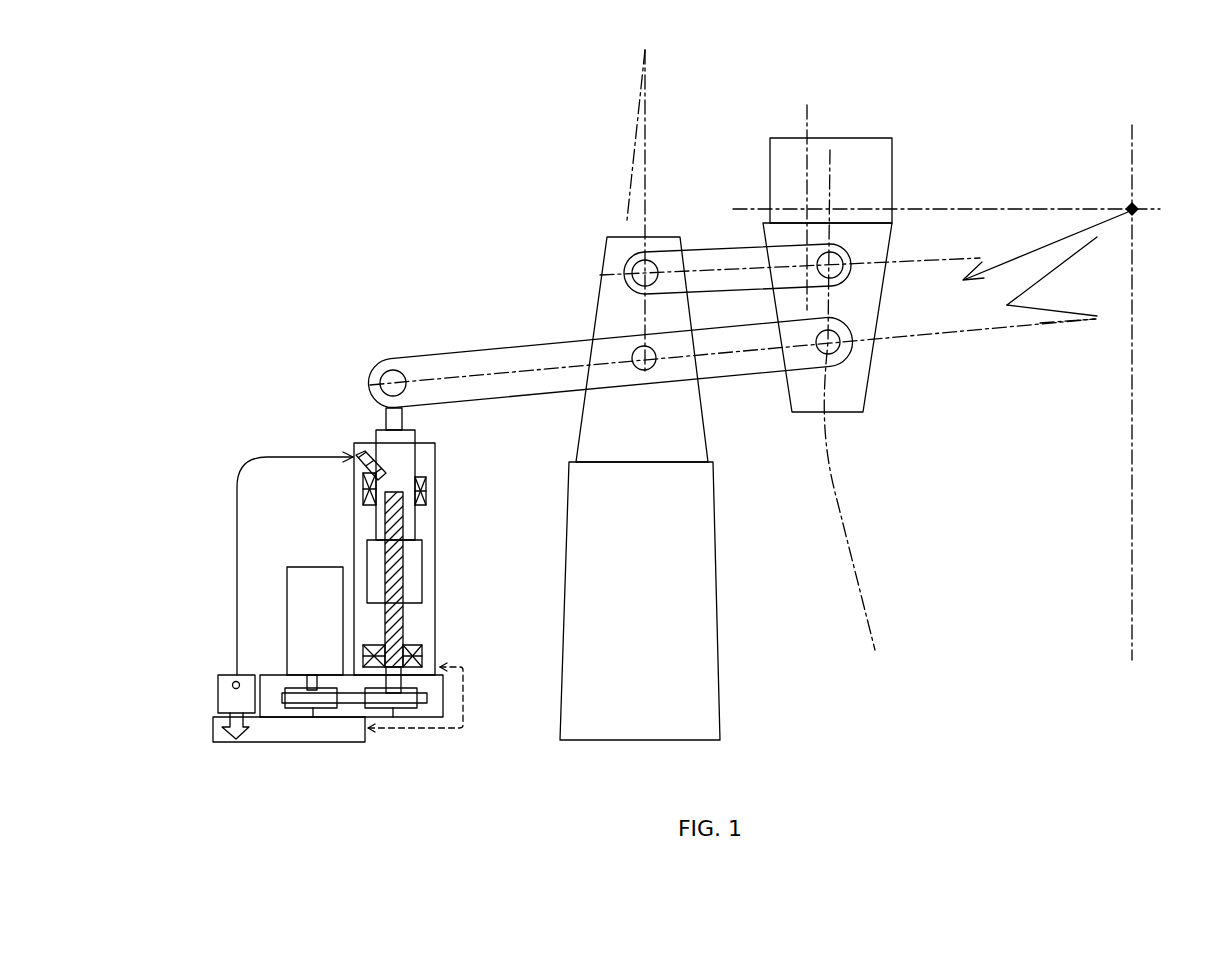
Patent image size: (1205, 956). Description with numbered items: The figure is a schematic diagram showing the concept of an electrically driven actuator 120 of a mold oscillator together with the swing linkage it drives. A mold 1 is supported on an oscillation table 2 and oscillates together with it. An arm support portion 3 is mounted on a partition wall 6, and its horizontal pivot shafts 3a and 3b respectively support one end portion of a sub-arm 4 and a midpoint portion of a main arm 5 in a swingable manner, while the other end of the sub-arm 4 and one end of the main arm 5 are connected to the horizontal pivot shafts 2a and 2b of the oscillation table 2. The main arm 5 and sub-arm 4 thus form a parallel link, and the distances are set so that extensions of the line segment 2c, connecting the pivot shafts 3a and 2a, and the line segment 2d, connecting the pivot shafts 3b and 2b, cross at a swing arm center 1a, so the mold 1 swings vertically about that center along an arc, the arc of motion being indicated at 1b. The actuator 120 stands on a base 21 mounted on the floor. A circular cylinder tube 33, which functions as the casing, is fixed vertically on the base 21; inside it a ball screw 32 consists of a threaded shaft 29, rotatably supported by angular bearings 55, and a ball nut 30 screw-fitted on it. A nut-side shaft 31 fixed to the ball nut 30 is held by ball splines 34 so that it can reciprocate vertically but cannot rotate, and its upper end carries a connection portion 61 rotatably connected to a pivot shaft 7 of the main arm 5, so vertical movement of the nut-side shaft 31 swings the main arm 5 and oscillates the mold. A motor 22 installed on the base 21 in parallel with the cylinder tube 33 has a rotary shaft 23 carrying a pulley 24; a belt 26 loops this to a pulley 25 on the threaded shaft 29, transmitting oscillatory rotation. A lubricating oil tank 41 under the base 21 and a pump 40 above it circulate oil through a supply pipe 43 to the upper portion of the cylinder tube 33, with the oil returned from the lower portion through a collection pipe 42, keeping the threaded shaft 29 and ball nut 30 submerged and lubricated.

The mold 1 is at (838, 165).
The swing arm center 1a is at (1137, 203).
The rotation axis line 1b is at (837, 495).
The oscillation table 2 is at (865, 309).
The pivot shaft 2a is at (850, 248).
The pivot shaft 2b is at (843, 353).
The line segment 2c is at (1058, 242).
The line segment 2d is at (1072, 260).
The arm support portion 3 is at (612, 313).
The pivot shaft 3a is at (617, 270).
The pivot shaft 3b is at (653, 364).
The sub-arm 4 is at (722, 266).
The main arm 5 is at (538, 388).
The partition wall 6 is at (677, 550).
The pivot shaft 7 is at (383, 367).
The base 21 is at (435, 692).
The motor 22 is at (313, 577).
The rotary shaft 23 is at (300, 687).
The pulley 24 is at (304, 708).
The pulley 25 is at (413, 712).
The belt 26 is at (356, 704).
The threaded shaft 29 is at (400, 612).
The ball nut 30 is at (412, 573).
The nut-side shaft 31 is at (402, 463).
The ball screw 32 is at (510, 560).
The cylinder tube 33 is at (355, 481).
The ball spline 34 is at (433, 490).
The pump 40 is at (222, 695).
The lubricating oil tank 41 is at (213, 732).
The collection pipe 42 is at (466, 705).
The supply pipe 43 is at (236, 550).
The angular bearing 55 is at (430, 655).
The connection portion 61 is at (392, 420).
The electrically driven actuator 120 is at (343, 431).